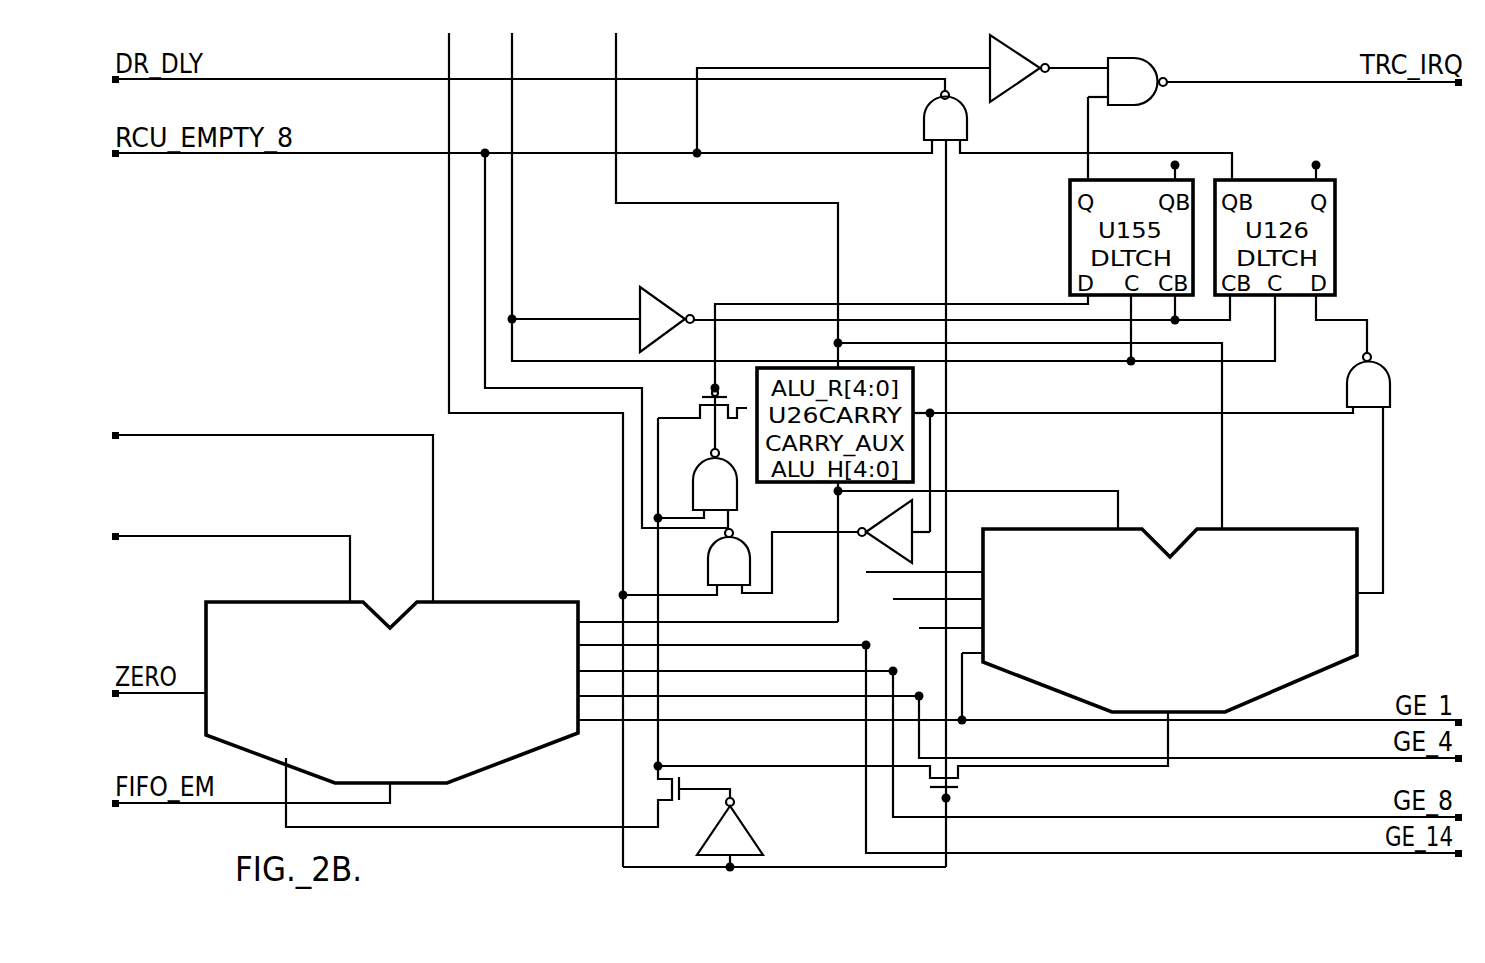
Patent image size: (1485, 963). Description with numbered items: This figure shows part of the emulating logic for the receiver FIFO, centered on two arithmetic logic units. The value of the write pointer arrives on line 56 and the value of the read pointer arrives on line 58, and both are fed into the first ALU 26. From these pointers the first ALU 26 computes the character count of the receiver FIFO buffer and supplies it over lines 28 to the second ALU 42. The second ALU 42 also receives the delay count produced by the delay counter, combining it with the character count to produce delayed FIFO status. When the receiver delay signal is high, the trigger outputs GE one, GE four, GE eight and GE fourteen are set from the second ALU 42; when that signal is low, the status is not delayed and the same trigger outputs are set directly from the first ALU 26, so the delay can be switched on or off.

The read pointer line 58 is at (313, 435).
The write pointer line 56 is at (293, 536).
The character count lines 28 is at (600, 622).
The first ALU 26 is at (494, 762).
The second ALU 42 is at (1312, 674).